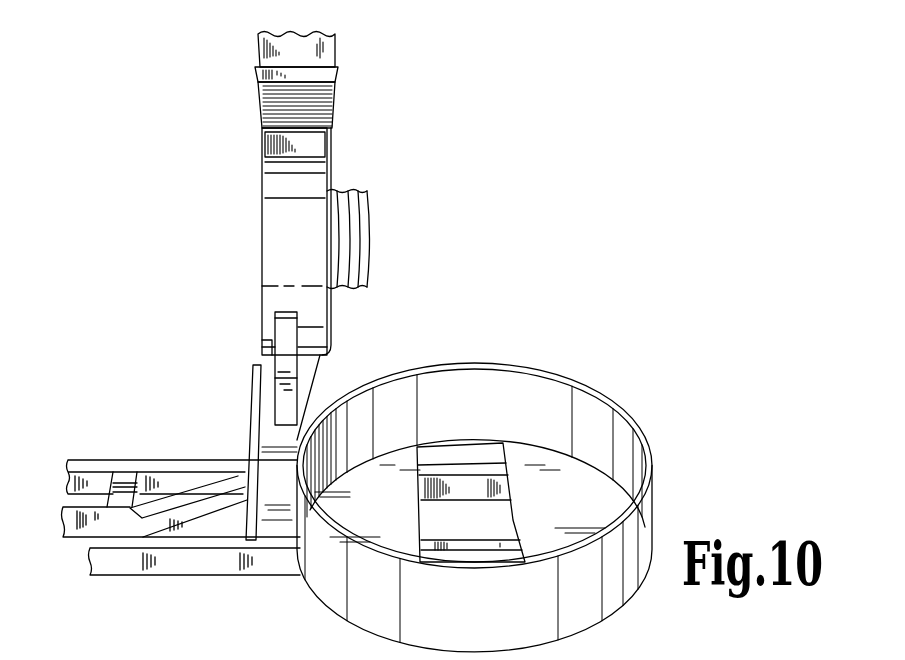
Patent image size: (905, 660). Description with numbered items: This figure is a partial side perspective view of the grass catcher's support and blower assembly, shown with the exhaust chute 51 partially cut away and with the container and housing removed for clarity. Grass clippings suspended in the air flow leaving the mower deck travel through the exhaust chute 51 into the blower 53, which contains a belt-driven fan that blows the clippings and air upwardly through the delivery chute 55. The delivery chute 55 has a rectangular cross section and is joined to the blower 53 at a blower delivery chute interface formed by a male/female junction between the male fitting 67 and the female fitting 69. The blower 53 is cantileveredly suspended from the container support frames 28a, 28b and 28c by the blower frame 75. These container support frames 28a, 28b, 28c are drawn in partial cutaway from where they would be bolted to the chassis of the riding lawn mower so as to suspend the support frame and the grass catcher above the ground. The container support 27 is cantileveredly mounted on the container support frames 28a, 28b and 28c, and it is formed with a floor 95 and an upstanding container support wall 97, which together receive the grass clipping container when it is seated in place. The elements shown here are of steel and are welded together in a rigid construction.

The delivery chute 55 is at (259, 55).
The female fitting 69 is at (332, 65).
The male fitting 67 is at (332, 170).
The exhaust chute 51 is at (352, 192).
The blower 53 is at (301, 229).
The blower frame 75 is at (307, 387).
The container support frame 28a is at (216, 459).
The container support frame 28b is at (241, 578).
The container support frame 28c is at (80, 541).
The container support 27 is at (657, 492).
The container support wall 97 is at (468, 420).
The floor 95 is at (383, 517).